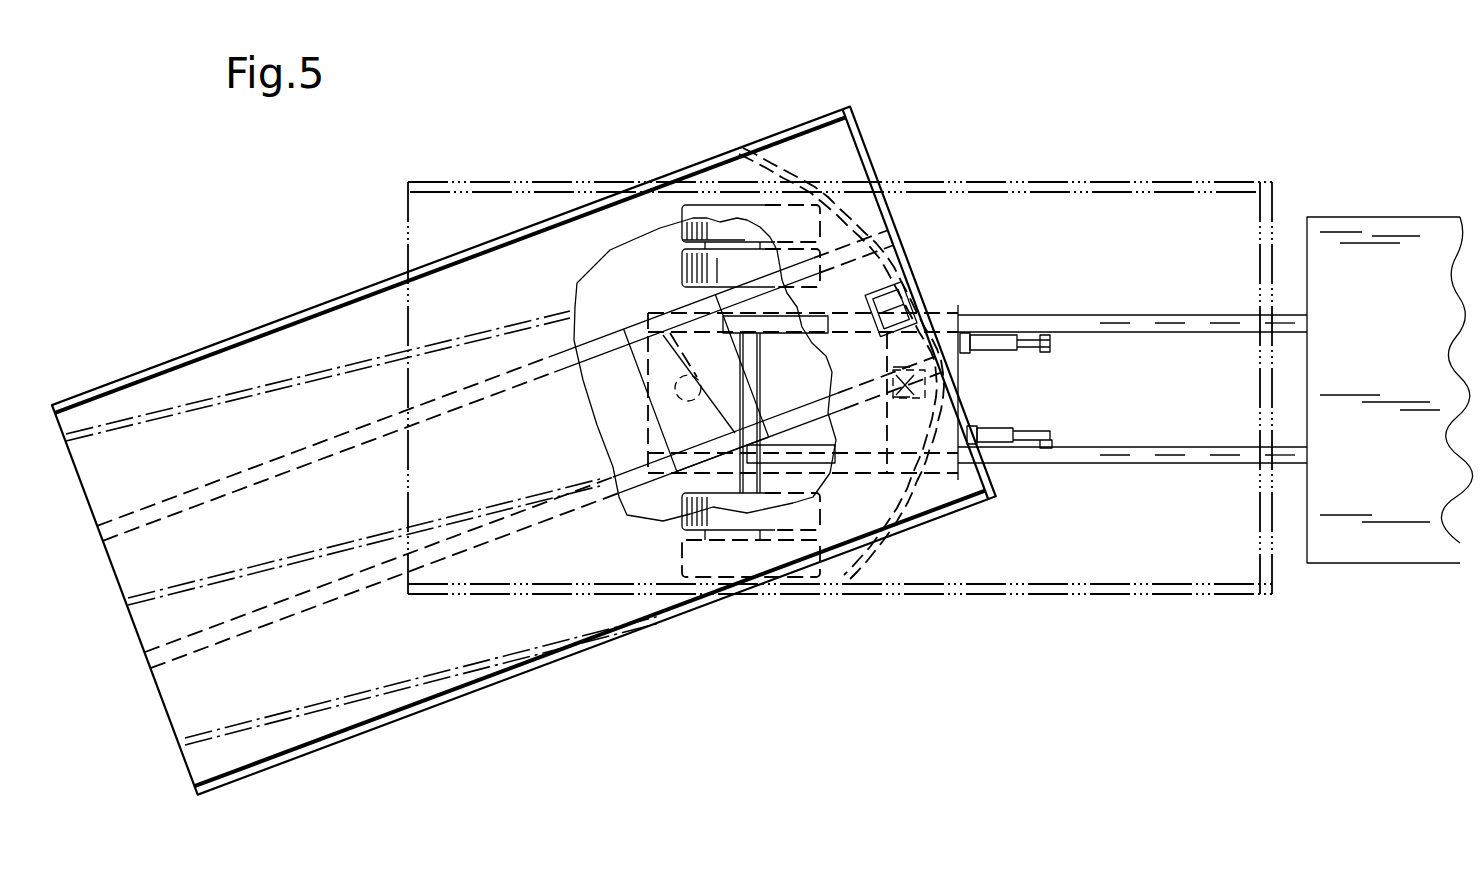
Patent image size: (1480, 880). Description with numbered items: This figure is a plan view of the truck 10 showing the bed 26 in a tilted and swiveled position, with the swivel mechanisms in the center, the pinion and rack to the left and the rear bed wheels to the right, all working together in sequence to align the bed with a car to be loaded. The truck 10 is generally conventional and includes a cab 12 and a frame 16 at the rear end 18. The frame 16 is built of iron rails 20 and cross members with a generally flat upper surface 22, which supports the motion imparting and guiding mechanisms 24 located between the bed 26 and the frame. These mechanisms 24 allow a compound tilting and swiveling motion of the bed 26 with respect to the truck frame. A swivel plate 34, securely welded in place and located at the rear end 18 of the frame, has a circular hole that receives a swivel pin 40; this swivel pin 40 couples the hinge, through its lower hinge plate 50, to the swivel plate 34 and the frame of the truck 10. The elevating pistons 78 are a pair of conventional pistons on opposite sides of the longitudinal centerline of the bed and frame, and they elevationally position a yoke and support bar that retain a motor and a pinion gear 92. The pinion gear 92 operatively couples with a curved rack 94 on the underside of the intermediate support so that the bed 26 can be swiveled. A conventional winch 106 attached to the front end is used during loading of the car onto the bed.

The truck 10 is at (1420, 158).
The cab 12 is at (1427, 216).
The frame 16 is at (702, 165).
The rear end 18 is at (408, 188).
The iron rails 20 is at (1095, 447).
The upper surface 22 is at (1138, 447).
The motion imparting and guiding mechanisms 24 is at (616, 456).
The bed 26 is at (440, 242).
The swivel plate 34 is at (645, 425).
The swivel pin 40 is at (649, 326).
The lower hinge plate 50 is at (645, 434).
The elevating pistons 78 is at (982, 428).
The pinion gear 92 is at (890, 370).
The curved rack 94 is at (871, 309).
The winch 106 is at (904, 294).